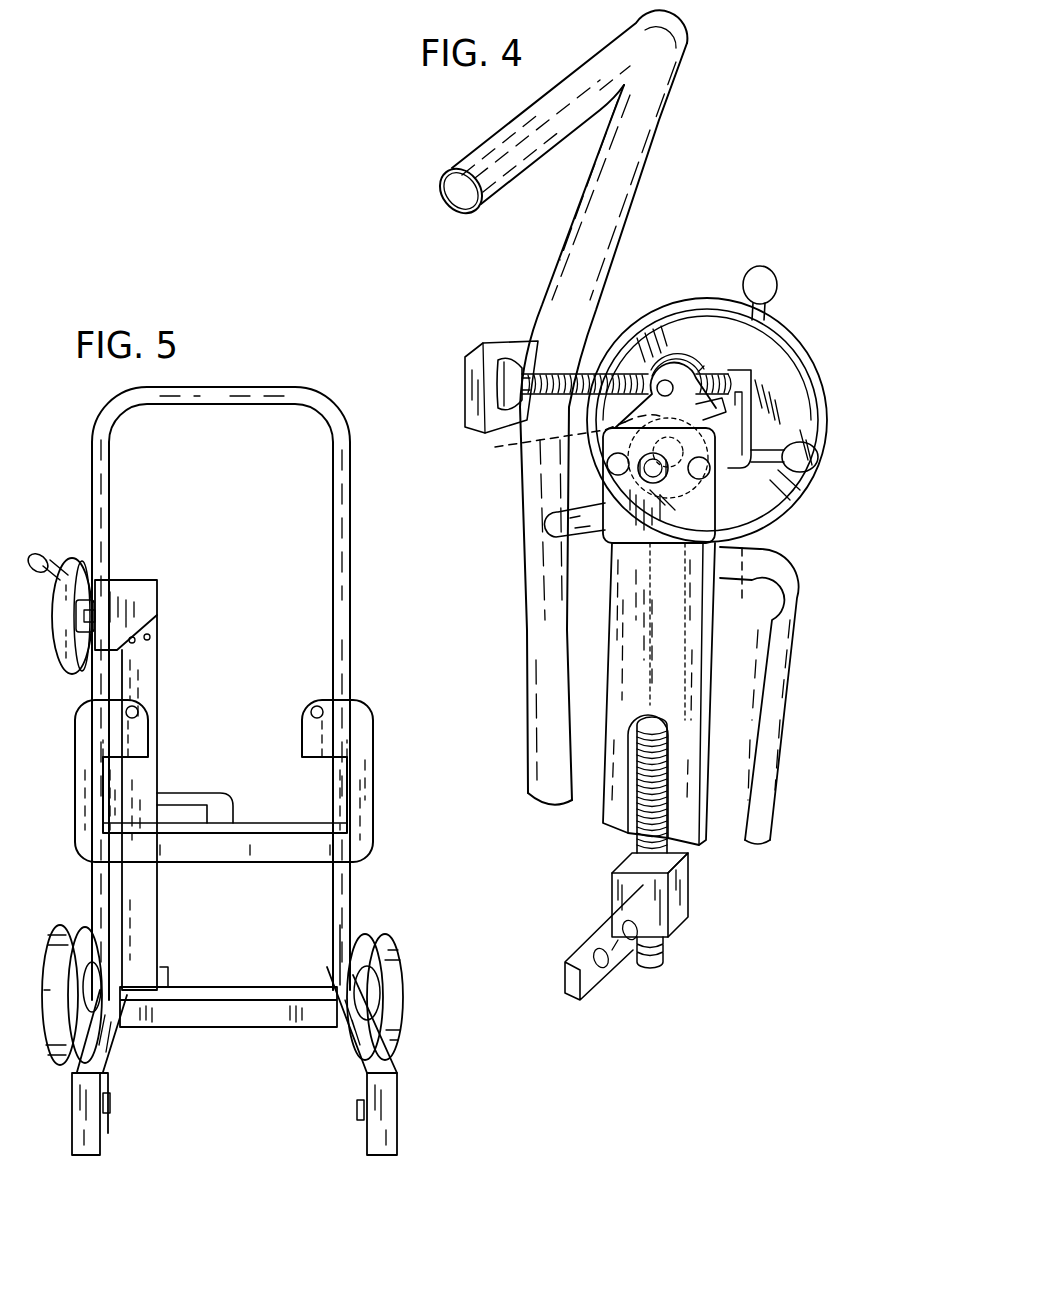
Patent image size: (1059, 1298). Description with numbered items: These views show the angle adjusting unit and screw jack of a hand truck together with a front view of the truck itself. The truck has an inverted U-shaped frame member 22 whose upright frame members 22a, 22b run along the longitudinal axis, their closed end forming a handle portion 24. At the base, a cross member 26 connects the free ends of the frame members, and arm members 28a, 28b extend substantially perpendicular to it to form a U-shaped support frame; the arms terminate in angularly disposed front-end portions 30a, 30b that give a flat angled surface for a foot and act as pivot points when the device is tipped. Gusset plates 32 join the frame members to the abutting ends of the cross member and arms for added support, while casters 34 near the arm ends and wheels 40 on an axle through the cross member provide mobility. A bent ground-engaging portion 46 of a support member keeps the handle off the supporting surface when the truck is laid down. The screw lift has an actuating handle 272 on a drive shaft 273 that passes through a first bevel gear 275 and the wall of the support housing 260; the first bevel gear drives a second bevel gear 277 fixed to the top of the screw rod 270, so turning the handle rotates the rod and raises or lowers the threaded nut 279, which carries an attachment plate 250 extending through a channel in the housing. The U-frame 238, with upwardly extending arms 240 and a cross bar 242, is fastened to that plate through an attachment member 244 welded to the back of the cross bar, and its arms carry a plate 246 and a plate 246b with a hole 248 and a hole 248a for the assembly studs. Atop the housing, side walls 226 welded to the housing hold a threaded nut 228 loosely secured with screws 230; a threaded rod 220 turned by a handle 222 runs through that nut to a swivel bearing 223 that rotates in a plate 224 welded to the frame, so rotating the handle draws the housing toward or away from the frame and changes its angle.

In FIG. 4, the frame member 22 is at (648, 162).
In FIG. 5, the frame member 22a is at (333, 495).
In FIG. 5, the frame member 22b is at (113, 498).
In FIG. 4, the handle portion 24 is at (500, 127).
In FIG. 5, the cross member 26 is at (243, 1018).
In FIG. 5, the arm member 28a is at (387, 1067).
In FIG. 5, the arm member 28b is at (100, 1057).
In FIG. 5, the front-end portion 30a is at (390, 1127).
In FIG. 5, the front-end portion 30b is at (98, 1135).
In FIG. 5, the gusset plate 32 is at (350, 930).
In FIG. 5, the caster 34 is at (110, 1103).
In FIG. 5, the wheel 40 is at (407, 960).
In FIG. 4, the ground-engaging portion 46 is at (760, 795).
In FIG. 4, the threaded rod 220 is at (598, 362).
In FIG. 4, the handle 222 is at (786, 406).
In FIG. 4, the swivel bearing 223 is at (518, 380).
In FIG. 4, the plate 224 is at (497, 347).
In FIG. 4, the side wall 226 is at (757, 480).
In FIG. 4, the threaded nut 228 is at (686, 358).
In FIG. 4, the screw 230 is at (663, 378).
In FIG. 5, the U-frame 238 is at (234, 798).
In FIG. 5, the upwardly extending arm 240 is at (363, 797).
In FIG. 5, the cross bar 242 is at (238, 852).
In FIG. 5, the attachment member 244 is at (210, 793).
In FIG. 5, the plate 246 is at (317, 741).
In FIG. 5, the plate 246b is at (95, 745).
In FIG. 5, the hole 248 is at (126, 714).
In FIG. 5, the hole 248a is at (316, 705).
In FIG. 4, the attachment plate 250 is at (605, 920).
In FIG. 4, the support housing 260 is at (702, 825).
In FIG. 5, the support housing 260 is at (150, 953).
In FIG. 4, the screw rod 270 is at (630, 855).
In FIG. 4, the actuating handle 272 is at (762, 308).
In FIG. 5, the actuating handle 272 is at (52, 613).
In FIG. 4, the drive shaft 273 is at (558, 524).
In FIG. 5, the drive shaft 273 is at (92, 607).
In FIG. 4, the first bevel gear 275 is at (551, 442).
In FIG. 4, the second bevel gear 277 is at (742, 591).
In FIG. 4, the threaded nut 279 is at (638, 470).